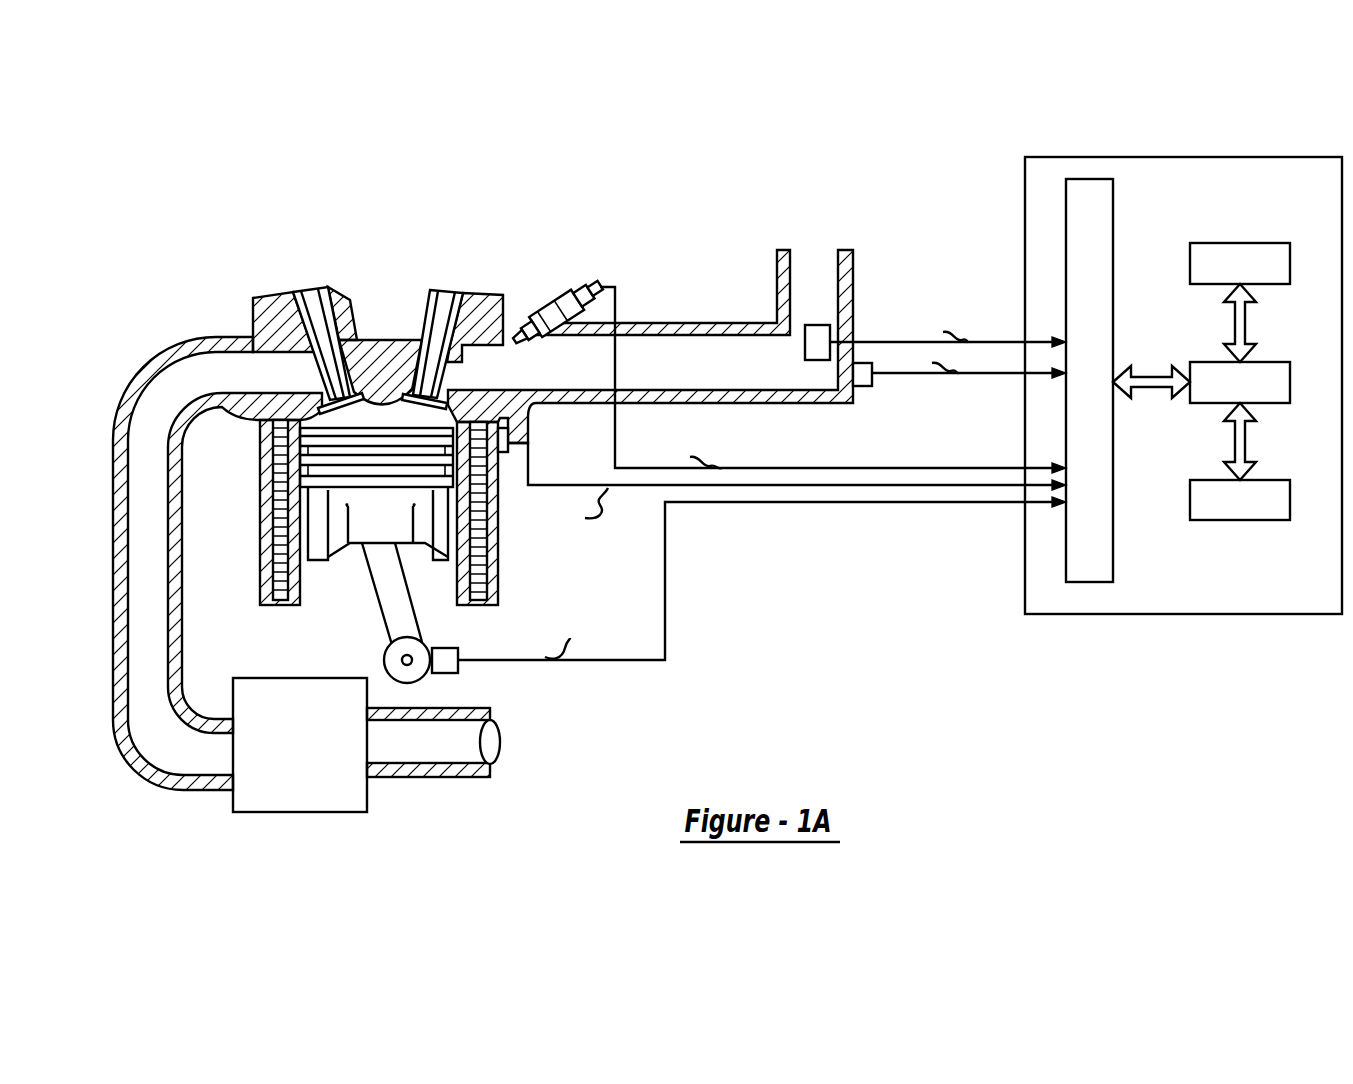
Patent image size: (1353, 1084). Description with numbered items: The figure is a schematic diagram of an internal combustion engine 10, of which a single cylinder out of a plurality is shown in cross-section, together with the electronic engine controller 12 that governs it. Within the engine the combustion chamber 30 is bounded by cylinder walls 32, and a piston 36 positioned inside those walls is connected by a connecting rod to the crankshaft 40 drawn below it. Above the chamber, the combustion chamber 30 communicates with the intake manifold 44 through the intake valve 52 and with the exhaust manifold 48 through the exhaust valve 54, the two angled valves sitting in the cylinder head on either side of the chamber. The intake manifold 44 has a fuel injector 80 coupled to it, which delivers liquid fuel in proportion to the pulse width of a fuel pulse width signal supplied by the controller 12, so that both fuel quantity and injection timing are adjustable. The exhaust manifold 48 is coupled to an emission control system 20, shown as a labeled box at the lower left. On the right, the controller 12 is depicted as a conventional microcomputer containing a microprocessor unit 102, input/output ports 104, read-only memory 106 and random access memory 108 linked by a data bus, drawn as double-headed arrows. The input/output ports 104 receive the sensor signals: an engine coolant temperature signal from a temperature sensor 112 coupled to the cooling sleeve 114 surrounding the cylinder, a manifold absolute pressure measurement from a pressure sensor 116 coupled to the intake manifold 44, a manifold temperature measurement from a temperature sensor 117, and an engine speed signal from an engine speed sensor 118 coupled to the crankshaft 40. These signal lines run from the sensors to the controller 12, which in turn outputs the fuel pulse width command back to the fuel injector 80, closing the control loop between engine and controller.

The internal combustion engine 10 is at (250, 232).
The electronic engine controller 12 is at (1185, 197).
The emission control system 20 is at (320, 813).
The combustion chamber 30 is at (365, 408).
The cylinder walls 32 is at (300, 598).
The piston 36 is at (358, 536).
The crankshaft 40 is at (412, 684).
The intake manifold 44 is at (660, 372).
The exhaust manifold 48 is at (165, 394).
The intake valve 52 is at (452, 380).
The exhaust valve 54 is at (312, 392).
The fuel injector 80 is at (562, 290).
The microprocessor unit 102 is at (1270, 361).
The input/output ports 104 is at (1025, 210).
The read-only memory 106 is at (1240, 243).
The random access memory 108 is at (1235, 521).
The temperature sensor 112 is at (517, 418).
The cooling sleeve 114 is at (494, 610).
The pressure sensor 116 is at (815, 366).
The temperature sensor 117 is at (863, 388).
The engine speed sensor 118 is at (457, 645).